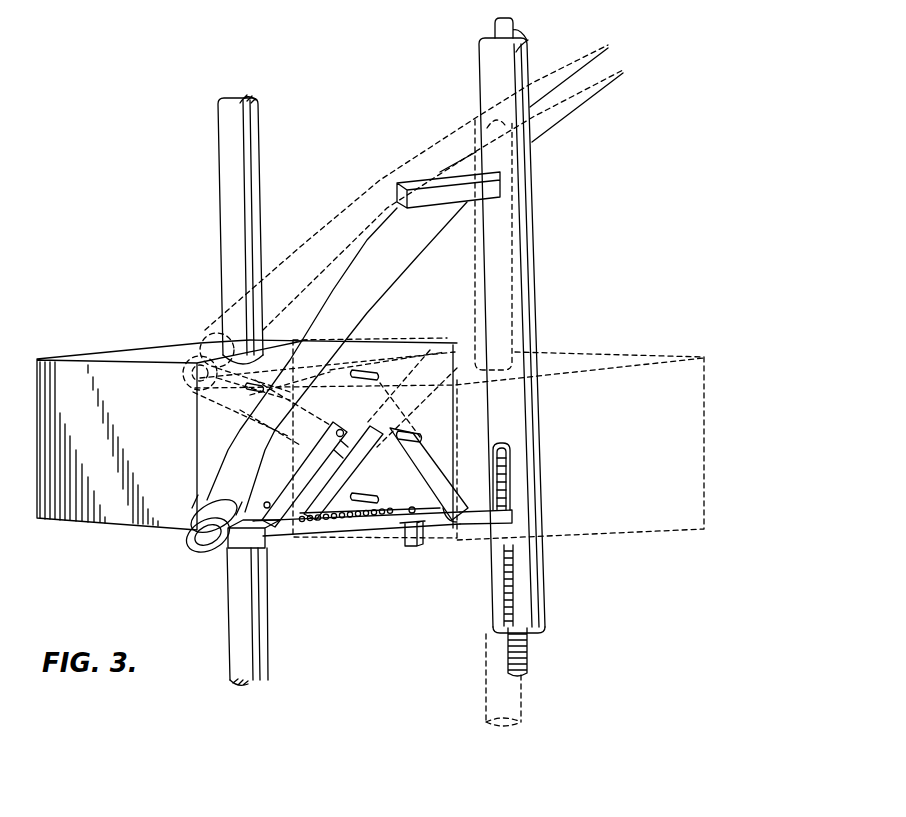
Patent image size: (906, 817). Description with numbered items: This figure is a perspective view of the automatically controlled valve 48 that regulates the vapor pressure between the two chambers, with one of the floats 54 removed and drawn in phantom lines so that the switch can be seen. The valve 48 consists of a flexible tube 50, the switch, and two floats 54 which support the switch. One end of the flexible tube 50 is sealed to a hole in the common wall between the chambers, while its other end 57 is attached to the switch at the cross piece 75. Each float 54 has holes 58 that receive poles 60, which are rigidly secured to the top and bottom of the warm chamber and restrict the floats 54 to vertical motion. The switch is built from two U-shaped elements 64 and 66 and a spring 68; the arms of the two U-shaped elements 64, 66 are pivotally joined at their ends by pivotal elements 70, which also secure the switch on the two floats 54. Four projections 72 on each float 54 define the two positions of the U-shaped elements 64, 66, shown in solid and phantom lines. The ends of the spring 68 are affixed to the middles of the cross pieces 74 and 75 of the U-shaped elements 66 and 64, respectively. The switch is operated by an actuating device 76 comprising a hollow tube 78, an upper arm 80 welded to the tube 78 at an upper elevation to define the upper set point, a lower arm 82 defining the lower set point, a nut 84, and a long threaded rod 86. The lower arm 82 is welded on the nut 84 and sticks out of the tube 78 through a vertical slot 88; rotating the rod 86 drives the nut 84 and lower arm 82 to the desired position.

The automatically controlled valve 48 is at (143, 231).
The flexible tube 50 is at (373, 268).
The floats 54 is at (108, 515).
The end of flexible tube 57 is at (196, 536).
The holes 58 is at (253, 356).
The poles 60 is at (493, 670).
The U-shaped element 64 is at (430, 467).
The U-shaped element 66 is at (231, 397).
The spring 68 is at (355, 506).
The pivotal elements 70 is at (366, 438).
The projections 72 is at (262, 382).
The cross piece 74 is at (240, 546).
The cross piece 75 is at (428, 513).
The actuating device 76 is at (574, 268).
The hollow tube 78 is at (535, 227).
The upper arm 80 is at (427, 190).
The lower arm 82 is at (445, 538).
The nut 84 is at (508, 507).
The long threaded rod 86 is at (523, 650).
The vertical slot 88 is at (510, 465).